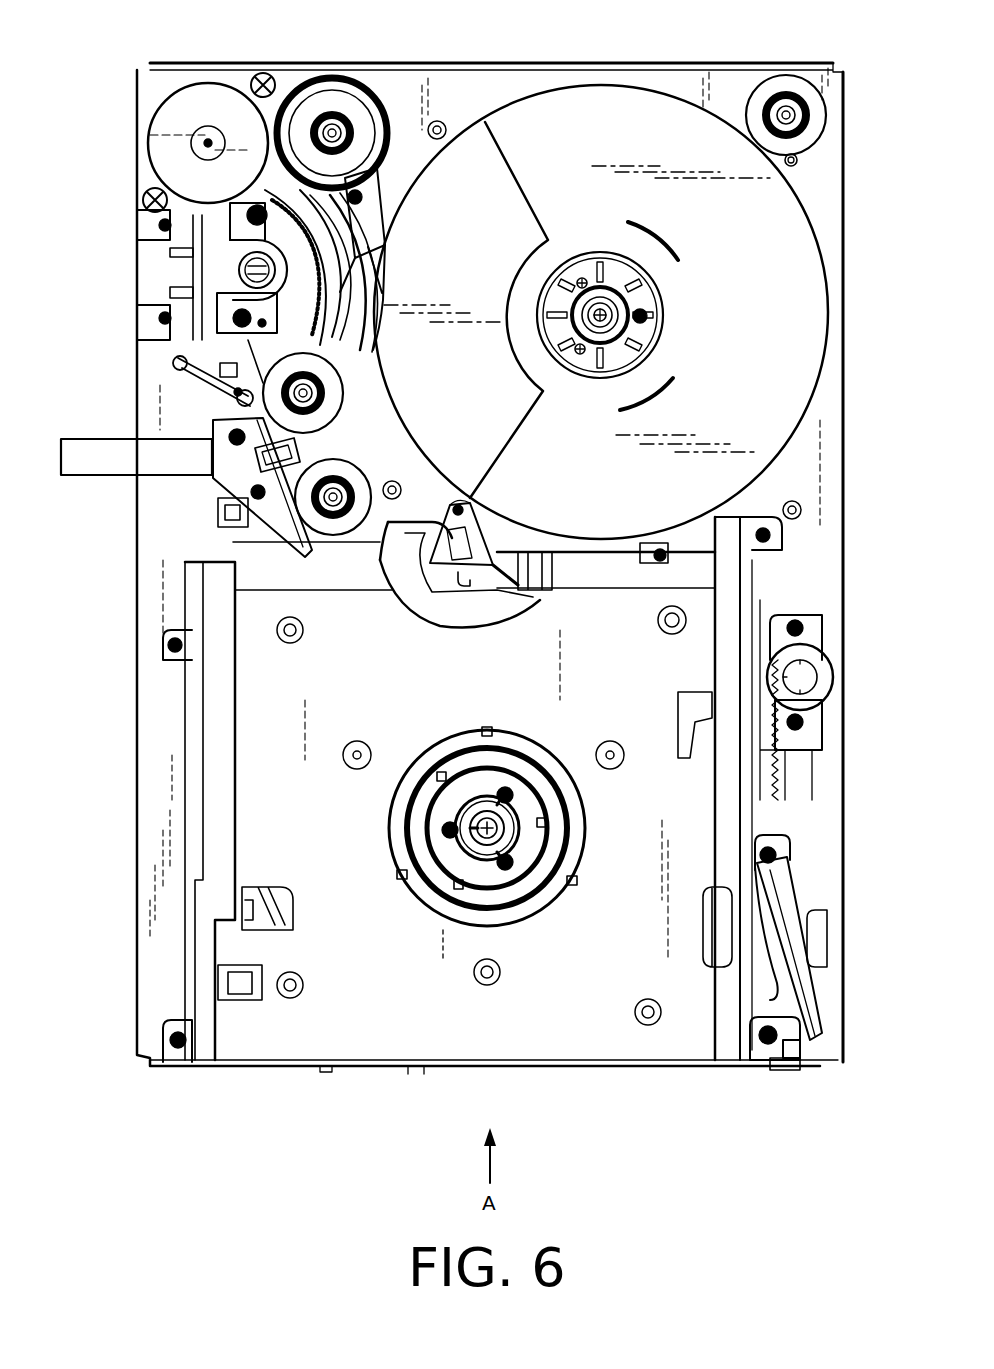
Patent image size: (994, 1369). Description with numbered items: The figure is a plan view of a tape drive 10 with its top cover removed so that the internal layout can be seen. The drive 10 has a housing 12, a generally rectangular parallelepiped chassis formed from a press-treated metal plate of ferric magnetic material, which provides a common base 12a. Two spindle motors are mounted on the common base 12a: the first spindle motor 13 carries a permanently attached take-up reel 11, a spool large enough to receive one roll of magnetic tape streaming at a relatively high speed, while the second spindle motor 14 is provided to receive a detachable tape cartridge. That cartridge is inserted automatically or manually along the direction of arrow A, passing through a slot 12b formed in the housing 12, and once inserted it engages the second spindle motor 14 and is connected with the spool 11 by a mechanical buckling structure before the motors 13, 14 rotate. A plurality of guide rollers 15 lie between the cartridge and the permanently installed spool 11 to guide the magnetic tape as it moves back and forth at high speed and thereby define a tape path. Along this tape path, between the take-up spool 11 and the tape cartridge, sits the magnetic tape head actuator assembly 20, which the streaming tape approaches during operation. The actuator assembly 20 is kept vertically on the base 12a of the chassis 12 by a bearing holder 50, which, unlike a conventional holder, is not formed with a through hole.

The tape drive 10 is at (137, 1066).
The take-up reel 11 is at (780, 233).
The housing 12 is at (137, 866).
The common base 12a is at (165, 795).
The slot 12b is at (735, 985).
The first spindle motor 13 is at (648, 332).
The second spindle motor 14 is at (527, 862).
The rollers 15 is at (353, 106).
The magnetic tape head actuator assembly 20 is at (184, 342).
The bearing holder 50 is at (222, 268).